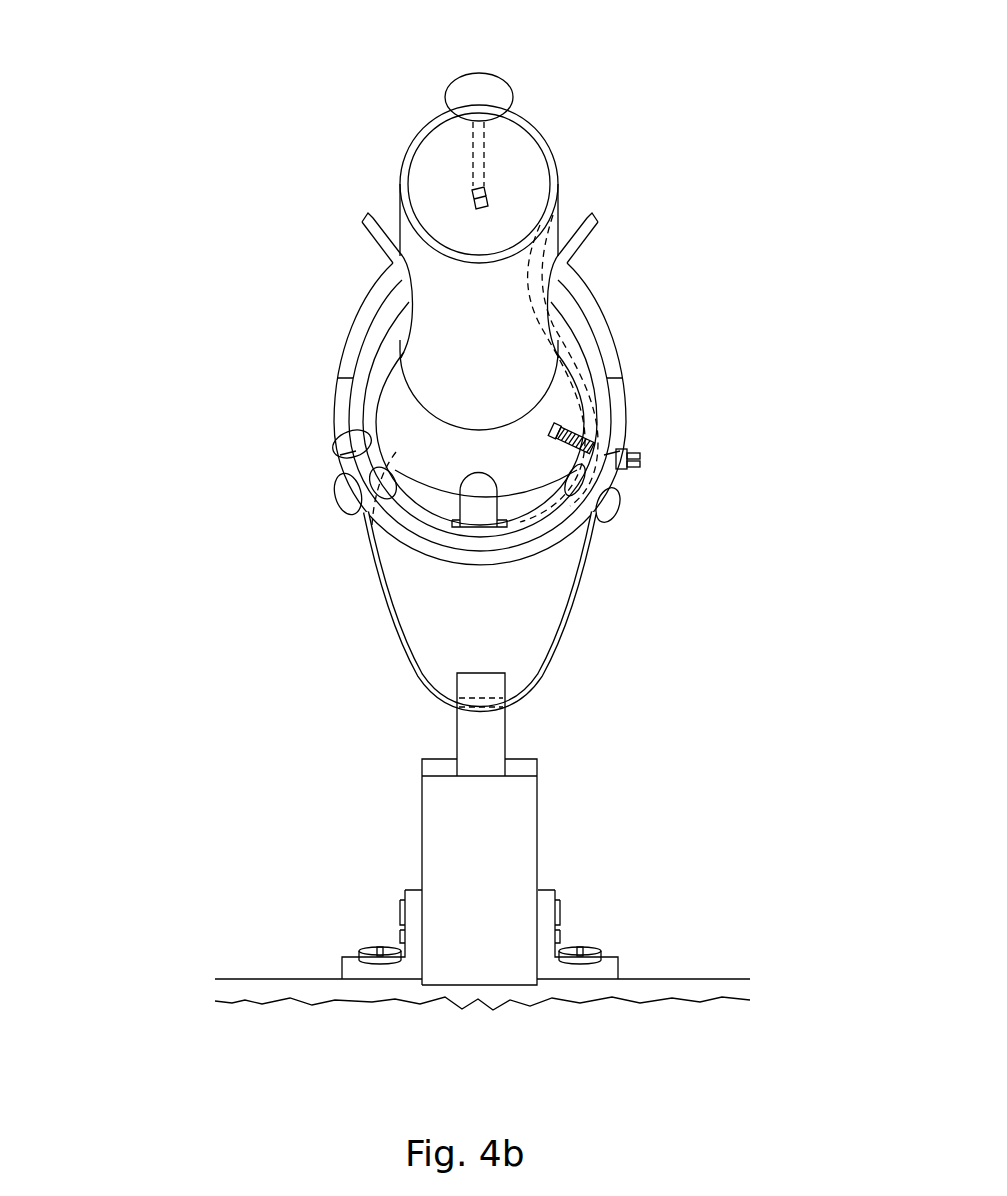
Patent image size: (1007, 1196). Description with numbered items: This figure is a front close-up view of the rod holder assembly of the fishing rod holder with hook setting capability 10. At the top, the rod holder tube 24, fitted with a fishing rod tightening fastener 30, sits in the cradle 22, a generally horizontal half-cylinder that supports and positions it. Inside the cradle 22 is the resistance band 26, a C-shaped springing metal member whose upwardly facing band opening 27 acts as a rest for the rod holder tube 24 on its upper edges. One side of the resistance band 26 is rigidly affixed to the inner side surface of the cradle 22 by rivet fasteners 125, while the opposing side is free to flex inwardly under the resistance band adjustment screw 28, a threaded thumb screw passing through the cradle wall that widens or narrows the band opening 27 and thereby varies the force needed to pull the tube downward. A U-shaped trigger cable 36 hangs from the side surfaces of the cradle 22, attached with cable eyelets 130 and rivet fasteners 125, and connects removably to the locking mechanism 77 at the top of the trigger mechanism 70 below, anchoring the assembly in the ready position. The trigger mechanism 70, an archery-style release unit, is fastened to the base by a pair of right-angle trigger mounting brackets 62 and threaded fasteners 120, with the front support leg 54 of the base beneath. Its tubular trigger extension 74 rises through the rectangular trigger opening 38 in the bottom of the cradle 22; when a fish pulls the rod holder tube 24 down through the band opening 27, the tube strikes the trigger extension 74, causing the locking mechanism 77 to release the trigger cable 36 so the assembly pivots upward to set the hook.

The fishing rod holder with hook setting capability 10 is at (108, 85).
The rod holder tube 24 is at (553, 165).
The fishing rod tightening fastener 30 is at (485, 187).
The band opening 27 is at (372, 228).
The cradle 22 is at (345, 402).
The resistance band 26 is at (368, 337).
The resistance band adjustment screw 28 is at (628, 447).
The trigger extension 74 is at (484, 493).
The trigger opening 38 is at (452, 520).
The rivet fasteners 125 is at (343, 490).
The cable eyelets 130 is at (372, 520).
The trigger cable 36 is at (558, 625).
The locking mechanism 77 is at (482, 732).
The trigger mechanism 70 is at (527, 838).
The threaded fasteners 120 is at (367, 948).
The trigger mounting brackets 62 is at (368, 968).
The front support leg 54 is at (680, 990).